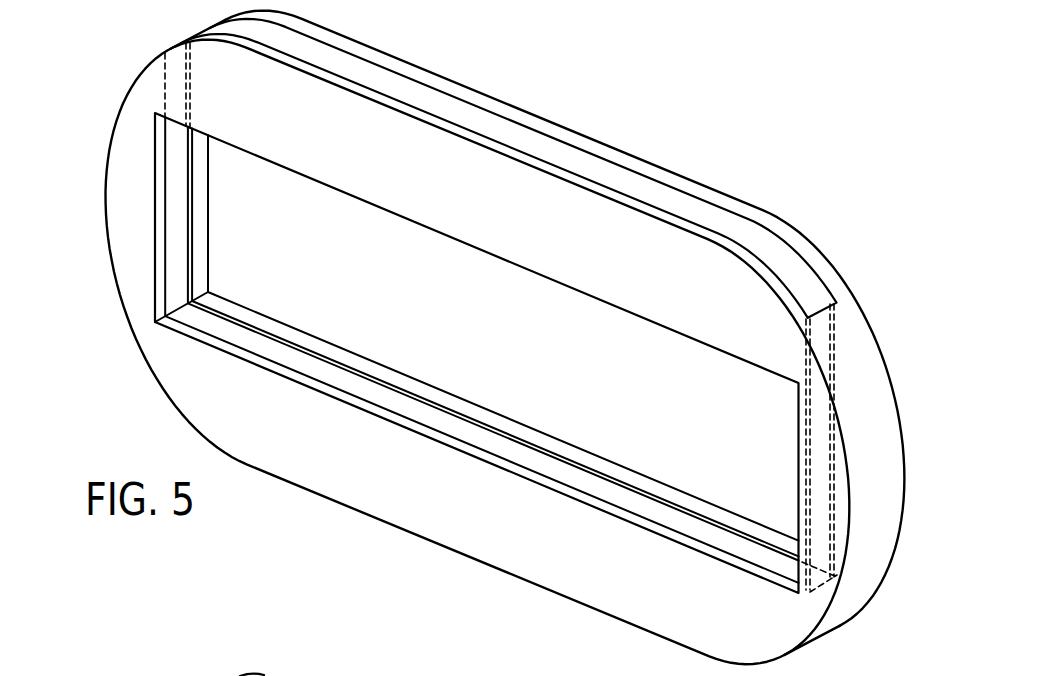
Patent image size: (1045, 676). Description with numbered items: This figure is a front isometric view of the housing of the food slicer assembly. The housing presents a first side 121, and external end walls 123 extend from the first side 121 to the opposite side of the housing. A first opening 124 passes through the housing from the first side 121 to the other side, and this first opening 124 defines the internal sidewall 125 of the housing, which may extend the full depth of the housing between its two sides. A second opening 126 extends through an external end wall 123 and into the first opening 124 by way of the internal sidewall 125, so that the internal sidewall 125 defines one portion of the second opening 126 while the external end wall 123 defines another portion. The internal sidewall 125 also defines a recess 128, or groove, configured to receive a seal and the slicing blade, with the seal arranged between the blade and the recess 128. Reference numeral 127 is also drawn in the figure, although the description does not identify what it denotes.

The first side 121 is at (127, 180).
The external end wall 123 is at (876, 356).
The first opening 124 is at (168, 236).
The internal sidewall 125 is at (201, 215).
The second opening 126 is at (326, 52).
The base 127 is at (277, 672).
The recess 128 is at (182, 263).